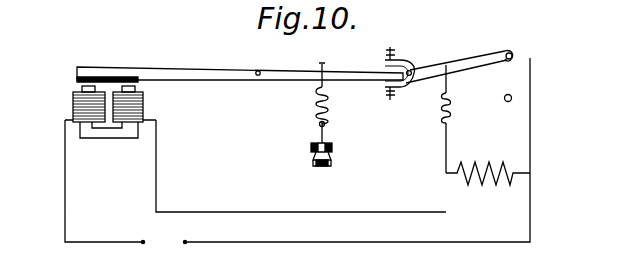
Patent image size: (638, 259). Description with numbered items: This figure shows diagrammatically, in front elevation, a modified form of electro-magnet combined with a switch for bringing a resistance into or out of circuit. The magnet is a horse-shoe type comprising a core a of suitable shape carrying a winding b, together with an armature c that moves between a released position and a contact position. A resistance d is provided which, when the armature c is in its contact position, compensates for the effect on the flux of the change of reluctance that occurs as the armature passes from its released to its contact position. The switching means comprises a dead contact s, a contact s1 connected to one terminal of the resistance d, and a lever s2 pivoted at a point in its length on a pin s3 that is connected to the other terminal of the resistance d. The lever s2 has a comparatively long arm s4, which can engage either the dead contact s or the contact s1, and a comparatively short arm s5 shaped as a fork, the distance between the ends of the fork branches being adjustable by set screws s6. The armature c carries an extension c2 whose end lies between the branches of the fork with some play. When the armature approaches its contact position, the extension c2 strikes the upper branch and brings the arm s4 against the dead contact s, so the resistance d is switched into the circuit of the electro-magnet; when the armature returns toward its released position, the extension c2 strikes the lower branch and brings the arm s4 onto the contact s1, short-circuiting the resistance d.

The core a is at (94, 78).
The winding b is at (136, 100).
The armature c is at (120, 76).
The extension c2 is at (201, 66).
The resistance d is at (505, 180).
The dead contact s is at (508, 101).
The contact s1 is at (510, 53).
The lever s2 is at (406, 82).
The pin s3 is at (410, 71).
The long arm s4 is at (474, 66).
The short arm s5 is at (392, 98).
The set screws s6 is at (390, 50).